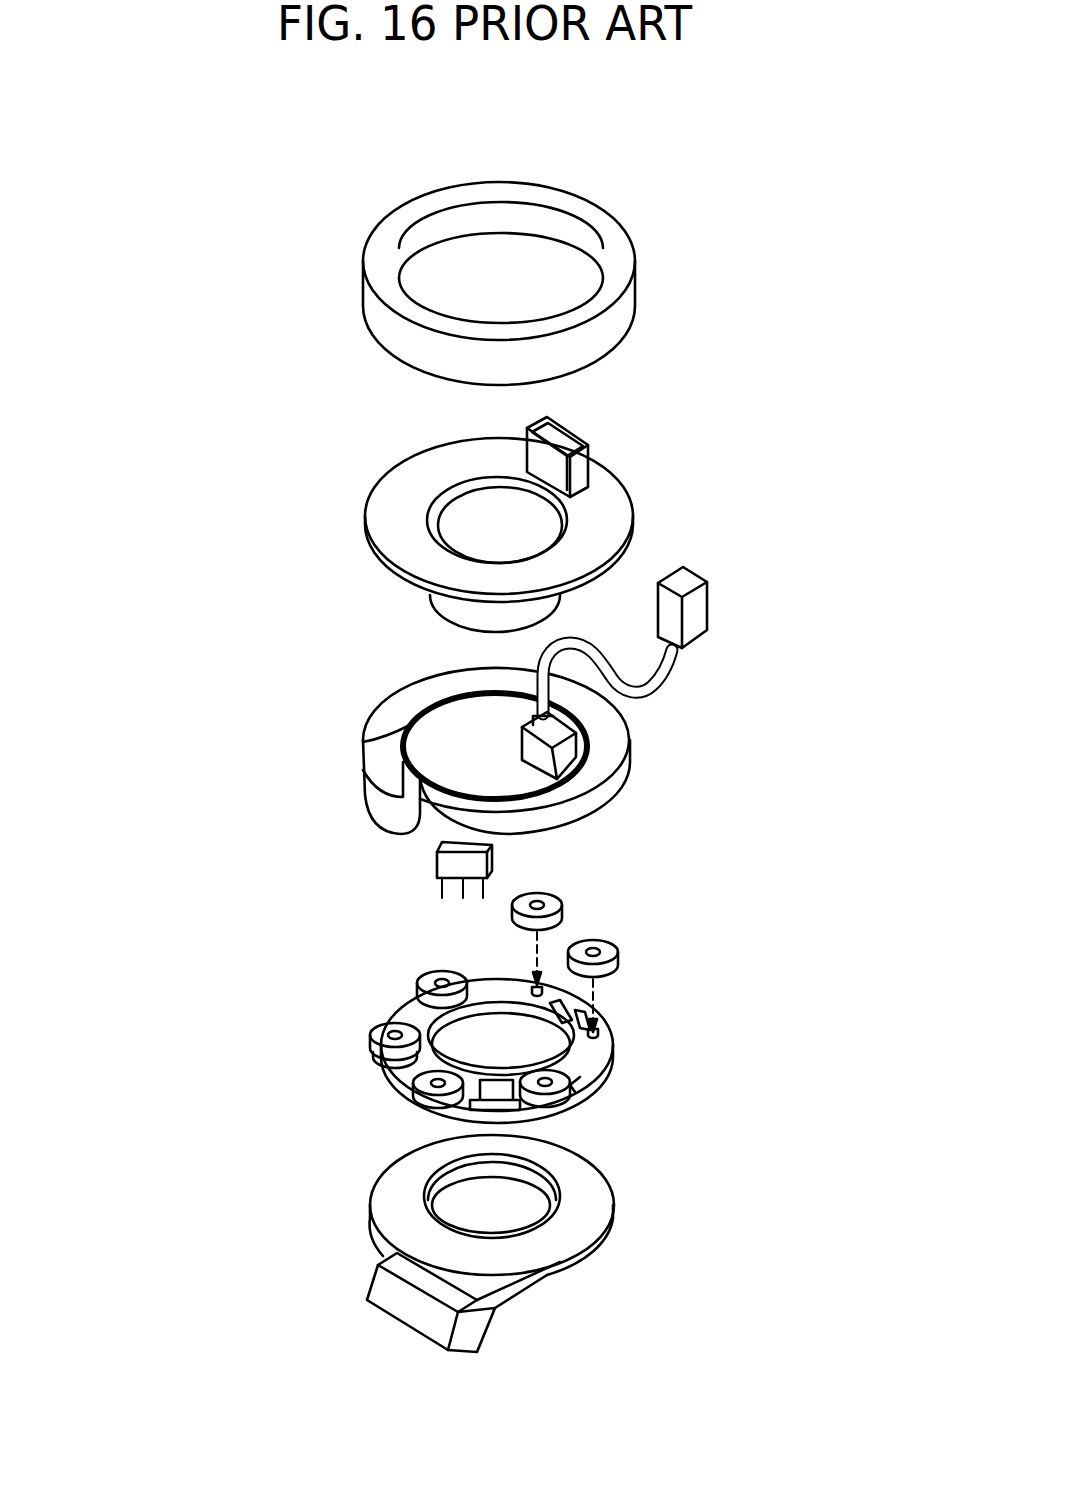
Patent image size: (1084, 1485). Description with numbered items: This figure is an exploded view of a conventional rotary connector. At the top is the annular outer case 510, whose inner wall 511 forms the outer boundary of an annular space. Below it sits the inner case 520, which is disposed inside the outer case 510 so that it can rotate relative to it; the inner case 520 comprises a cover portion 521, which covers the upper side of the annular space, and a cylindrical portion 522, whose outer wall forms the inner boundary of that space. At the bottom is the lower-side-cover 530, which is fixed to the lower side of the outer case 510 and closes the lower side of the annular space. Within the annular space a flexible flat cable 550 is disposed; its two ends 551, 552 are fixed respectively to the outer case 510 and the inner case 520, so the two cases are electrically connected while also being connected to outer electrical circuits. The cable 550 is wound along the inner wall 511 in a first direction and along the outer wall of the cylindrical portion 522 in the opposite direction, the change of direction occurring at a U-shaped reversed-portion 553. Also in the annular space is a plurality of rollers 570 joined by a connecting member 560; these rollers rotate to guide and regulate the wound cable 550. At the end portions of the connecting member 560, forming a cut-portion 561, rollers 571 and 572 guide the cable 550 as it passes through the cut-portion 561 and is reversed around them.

The annular outer case 510 is at (588, 246).
The inner wall of the outer case 511 is at (545, 223).
The inner case 520 is at (358, 524).
The cover portion 521 is at (382, 513).
The cylindrical portion 522 is at (458, 613).
The lower-side-cover 530 is at (613, 1232).
The flexible flat cable 550 is at (396, 732).
The end of the cable 551 is at (435, 868).
The end of the cable 552 is at (532, 748).
The U-shaped reversed-portion 553 is at (405, 813).
The connecting member 560 is at (495, 1012).
The cut-portion 561 is at (405, 1077).
The rollers 570 is at (620, 950).
The roller 571 is at (410, 1103).
The roller 572 is at (372, 1045).